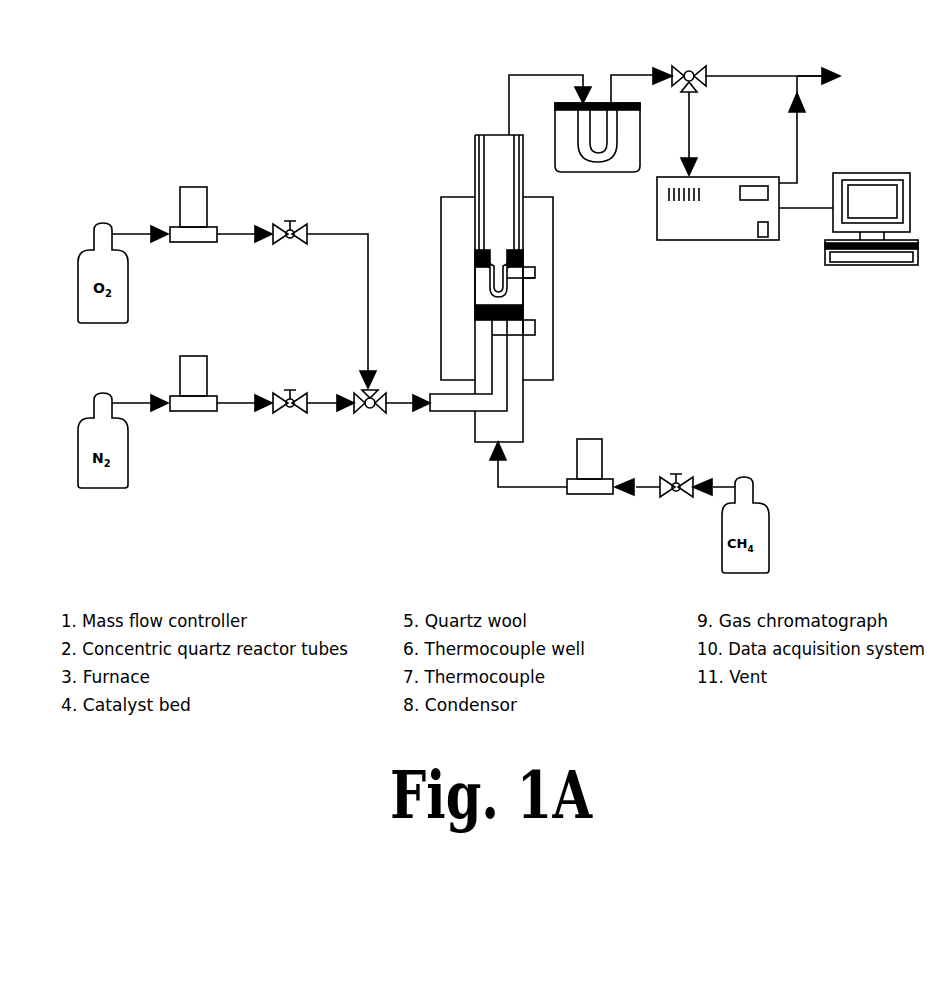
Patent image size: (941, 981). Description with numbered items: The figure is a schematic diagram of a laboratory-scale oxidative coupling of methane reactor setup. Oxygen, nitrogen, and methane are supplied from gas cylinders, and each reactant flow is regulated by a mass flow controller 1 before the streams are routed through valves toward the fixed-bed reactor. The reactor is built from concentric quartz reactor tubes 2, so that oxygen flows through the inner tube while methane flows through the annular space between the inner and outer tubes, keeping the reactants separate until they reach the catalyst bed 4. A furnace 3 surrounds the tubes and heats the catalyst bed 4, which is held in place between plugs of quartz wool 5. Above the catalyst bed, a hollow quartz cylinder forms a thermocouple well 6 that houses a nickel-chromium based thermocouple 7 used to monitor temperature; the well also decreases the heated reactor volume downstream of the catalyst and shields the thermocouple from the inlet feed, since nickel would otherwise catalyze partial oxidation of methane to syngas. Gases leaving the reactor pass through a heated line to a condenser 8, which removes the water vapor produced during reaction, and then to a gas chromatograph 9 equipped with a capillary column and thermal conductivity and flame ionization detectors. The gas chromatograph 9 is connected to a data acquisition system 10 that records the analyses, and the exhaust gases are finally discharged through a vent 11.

The mass flow controller 1 is at (391, 361).
The concentric quartz reactor tubes 2 is at (465, 432).
The furnace 3 is at (553, 358).
The catalyst bed 4 is at (465, 292).
The quartz wool 5 is at (538, 301).
The thermocouple well 6 is at (472, 175).
The thermocouple 7 is at (484, 120).
The condenser 8 is at (597, 160).
The gas chromatograph 9 is at (718, 240).
The data acquisition system 10 is at (871, 243).
The vent 11 is at (842, 76).